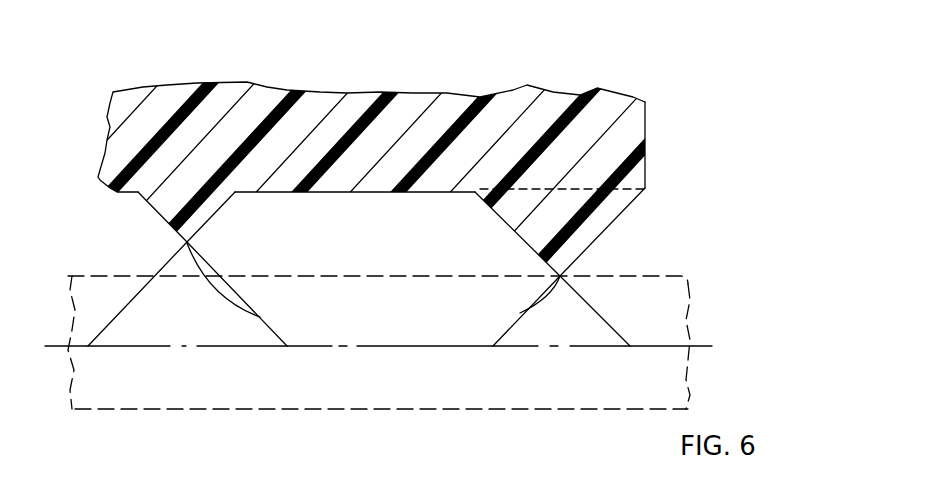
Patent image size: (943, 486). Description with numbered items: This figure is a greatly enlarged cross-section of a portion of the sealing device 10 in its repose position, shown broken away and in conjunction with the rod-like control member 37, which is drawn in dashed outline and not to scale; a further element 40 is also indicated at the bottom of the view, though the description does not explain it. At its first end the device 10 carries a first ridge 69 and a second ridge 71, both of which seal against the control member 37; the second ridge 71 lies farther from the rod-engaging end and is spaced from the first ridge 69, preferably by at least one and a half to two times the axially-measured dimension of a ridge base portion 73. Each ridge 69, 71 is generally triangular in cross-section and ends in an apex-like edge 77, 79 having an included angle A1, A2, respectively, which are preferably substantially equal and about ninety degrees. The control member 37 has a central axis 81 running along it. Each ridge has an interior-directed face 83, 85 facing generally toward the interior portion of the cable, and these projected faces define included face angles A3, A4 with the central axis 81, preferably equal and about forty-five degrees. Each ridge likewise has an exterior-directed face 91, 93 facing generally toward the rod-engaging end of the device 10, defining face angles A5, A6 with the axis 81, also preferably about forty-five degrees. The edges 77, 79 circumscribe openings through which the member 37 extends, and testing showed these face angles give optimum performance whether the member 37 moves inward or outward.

The sealing device 10 is at (365, 65).
The second ridge 71 is at (185, 193).
The first ridge 69 is at (577, 205).
The ridge base portion 73 is at (640, 173).
The exterior-directed face 91 is at (622, 210).
The interior-directed face 83 is at (507, 223).
The interior-directed face 85 is at (150, 210).
The exterior-directed face 93 is at (223, 208).
The included angle A1 is at (560, 257).
The included angle A2 is at (188, 232).
The included face angle A3 is at (602, 337).
The included face angle A4 is at (263, 338).
The included face angle A5 is at (515, 338).
The included face angle A6 is at (115, 335).
The edge 79 is at (262, 314).
The edge 77 is at (527, 311).
The central axis 81 is at (697, 347).
The control member 37 is at (148, 413).
The base 40 is at (506, 481).